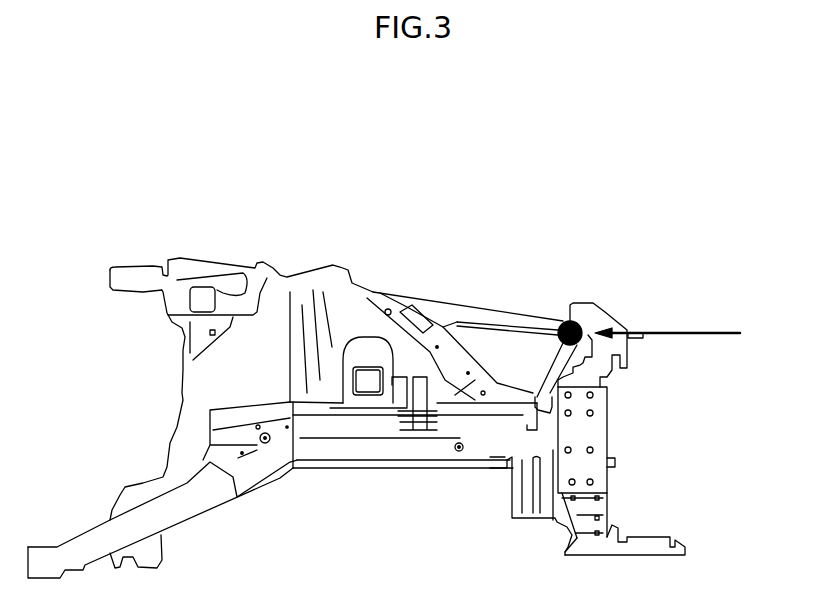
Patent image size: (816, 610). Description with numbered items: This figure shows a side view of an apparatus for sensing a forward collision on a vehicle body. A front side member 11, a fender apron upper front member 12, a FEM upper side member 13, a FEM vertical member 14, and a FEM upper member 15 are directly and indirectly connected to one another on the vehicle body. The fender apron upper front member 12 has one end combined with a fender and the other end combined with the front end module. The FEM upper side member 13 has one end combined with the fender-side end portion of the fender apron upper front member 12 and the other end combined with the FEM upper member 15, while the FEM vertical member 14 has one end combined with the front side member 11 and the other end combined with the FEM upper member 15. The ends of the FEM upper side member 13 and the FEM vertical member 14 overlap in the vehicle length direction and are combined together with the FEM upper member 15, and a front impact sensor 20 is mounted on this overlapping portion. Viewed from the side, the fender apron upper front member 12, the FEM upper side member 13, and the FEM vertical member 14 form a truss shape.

The front side member 11 is at (332, 450).
The fender apron upper front member 12 is at (458, 370).
The FEM upper side member 13 is at (500, 317).
The FEM vertical member 14 is at (575, 360).
The FEM upper member 15 is at (593, 433).
The front impact sensor 20 is at (580, 320).